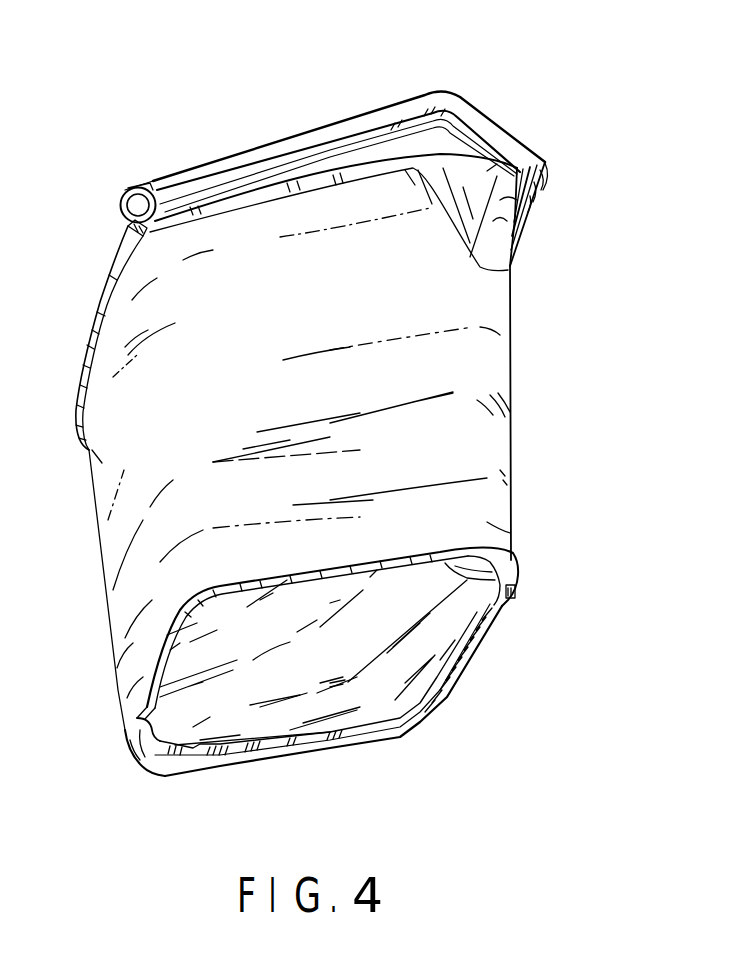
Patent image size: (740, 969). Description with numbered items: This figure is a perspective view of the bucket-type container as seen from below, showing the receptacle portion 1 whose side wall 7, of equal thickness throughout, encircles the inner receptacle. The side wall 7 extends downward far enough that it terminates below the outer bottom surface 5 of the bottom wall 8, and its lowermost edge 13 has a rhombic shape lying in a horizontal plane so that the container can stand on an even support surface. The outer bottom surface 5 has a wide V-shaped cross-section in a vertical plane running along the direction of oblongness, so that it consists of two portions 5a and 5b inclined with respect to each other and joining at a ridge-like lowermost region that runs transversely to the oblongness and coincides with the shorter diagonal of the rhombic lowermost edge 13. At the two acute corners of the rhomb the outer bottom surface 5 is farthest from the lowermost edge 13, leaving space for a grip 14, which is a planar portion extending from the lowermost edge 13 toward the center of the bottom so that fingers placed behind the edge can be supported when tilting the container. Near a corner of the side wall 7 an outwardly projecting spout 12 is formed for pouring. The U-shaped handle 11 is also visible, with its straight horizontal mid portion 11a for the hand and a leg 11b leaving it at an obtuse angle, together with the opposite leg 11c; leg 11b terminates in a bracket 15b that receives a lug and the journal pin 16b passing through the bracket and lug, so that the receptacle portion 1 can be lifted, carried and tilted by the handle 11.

The receptacle portion 1 is at (546, 379).
The outer bottom surface 5 is at (370, 687).
The first inclined portion of outer bottom surface 5a is at (433, 640).
The second inclined portion of outer bottom surface 5b is at (227, 697).
The receptacle portion side wall 7 is at (160, 608).
The receptacle portion bottom wall 8 is at (265, 680).
The handle 11 is at (389, 77).
The horizontal mid portion 11a is at (487, 124).
The first leg of handle 11b is at (251, 158).
The second leg of handle 11c is at (527, 215).
The spout 12 is at (500, 177).
The lowermost edge 13 is at (480, 650).
The grip 14 is at (505, 603).
The bracket 15b is at (132, 182).
The journal pin 16b is at (123, 209).